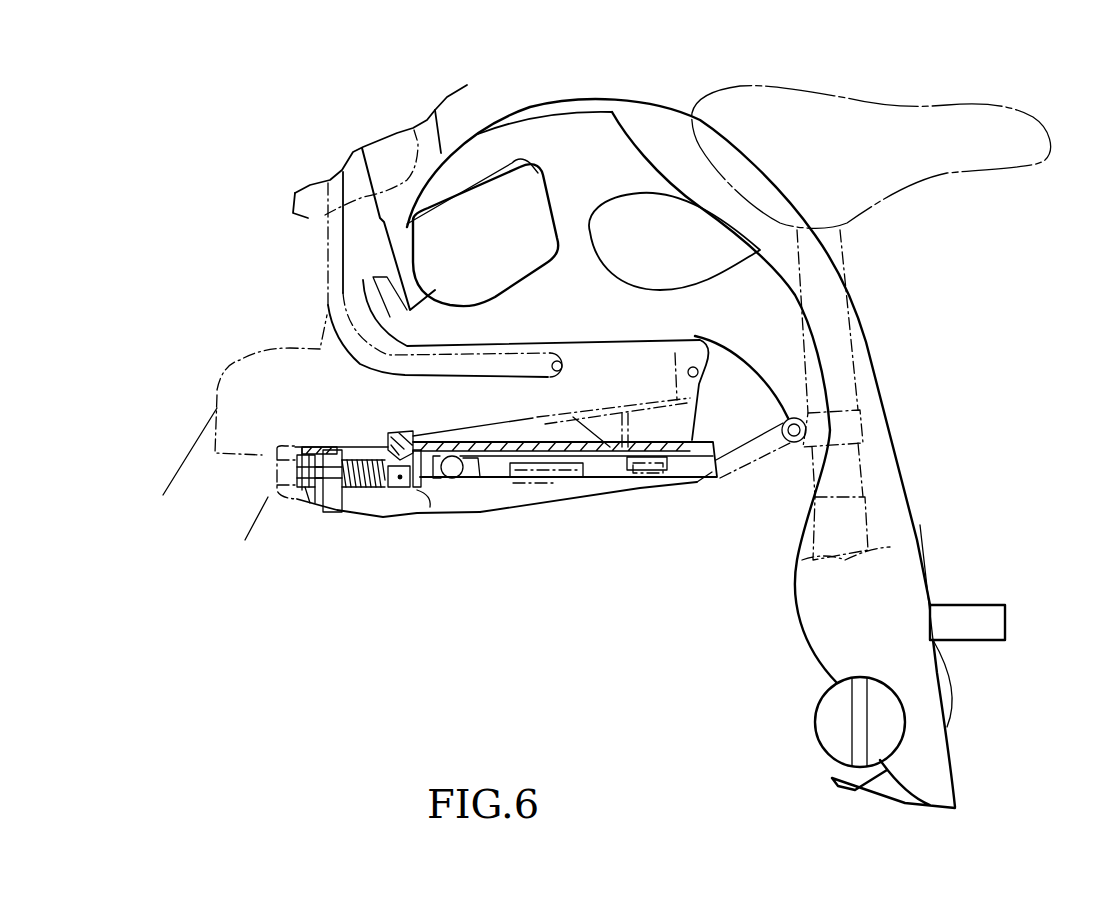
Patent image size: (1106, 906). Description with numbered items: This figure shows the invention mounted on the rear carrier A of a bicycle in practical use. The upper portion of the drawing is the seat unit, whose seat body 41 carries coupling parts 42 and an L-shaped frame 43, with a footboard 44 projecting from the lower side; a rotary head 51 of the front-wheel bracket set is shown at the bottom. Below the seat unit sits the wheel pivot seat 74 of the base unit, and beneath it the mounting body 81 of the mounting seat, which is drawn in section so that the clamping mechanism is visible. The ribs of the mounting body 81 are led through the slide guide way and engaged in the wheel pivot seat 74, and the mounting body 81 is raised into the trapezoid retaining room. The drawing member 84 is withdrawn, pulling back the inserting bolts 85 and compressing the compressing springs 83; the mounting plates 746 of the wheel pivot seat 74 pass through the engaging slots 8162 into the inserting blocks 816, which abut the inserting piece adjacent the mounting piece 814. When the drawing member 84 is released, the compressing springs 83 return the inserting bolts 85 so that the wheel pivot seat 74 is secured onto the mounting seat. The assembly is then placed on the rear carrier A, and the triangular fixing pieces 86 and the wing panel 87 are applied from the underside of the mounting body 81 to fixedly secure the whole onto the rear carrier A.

The seat body 41 is at (606, 88).
The coupling part 42 is at (500, 214).
The L-shaped frame 43 is at (320, 268).
The footboard 44 is at (1020, 628).
The rotary head 51 is at (803, 742).
The wheel pivot seat 74 is at (210, 388).
The mounting body 81 is at (644, 497).
The compressing spring 83 is at (358, 452).
The drawing member 84 is at (315, 440).
The inserting bolt 85 is at (323, 505).
The triangular fixing piece 86 is at (556, 503).
The wing panel 87 is at (472, 495).
The mounting plate 746 is at (388, 436).
The mounting piece 814 is at (343, 513).
The inserting block 816 is at (400, 490).
The engaging slot 8162 is at (424, 490).
The rear carrier A is at (703, 467).